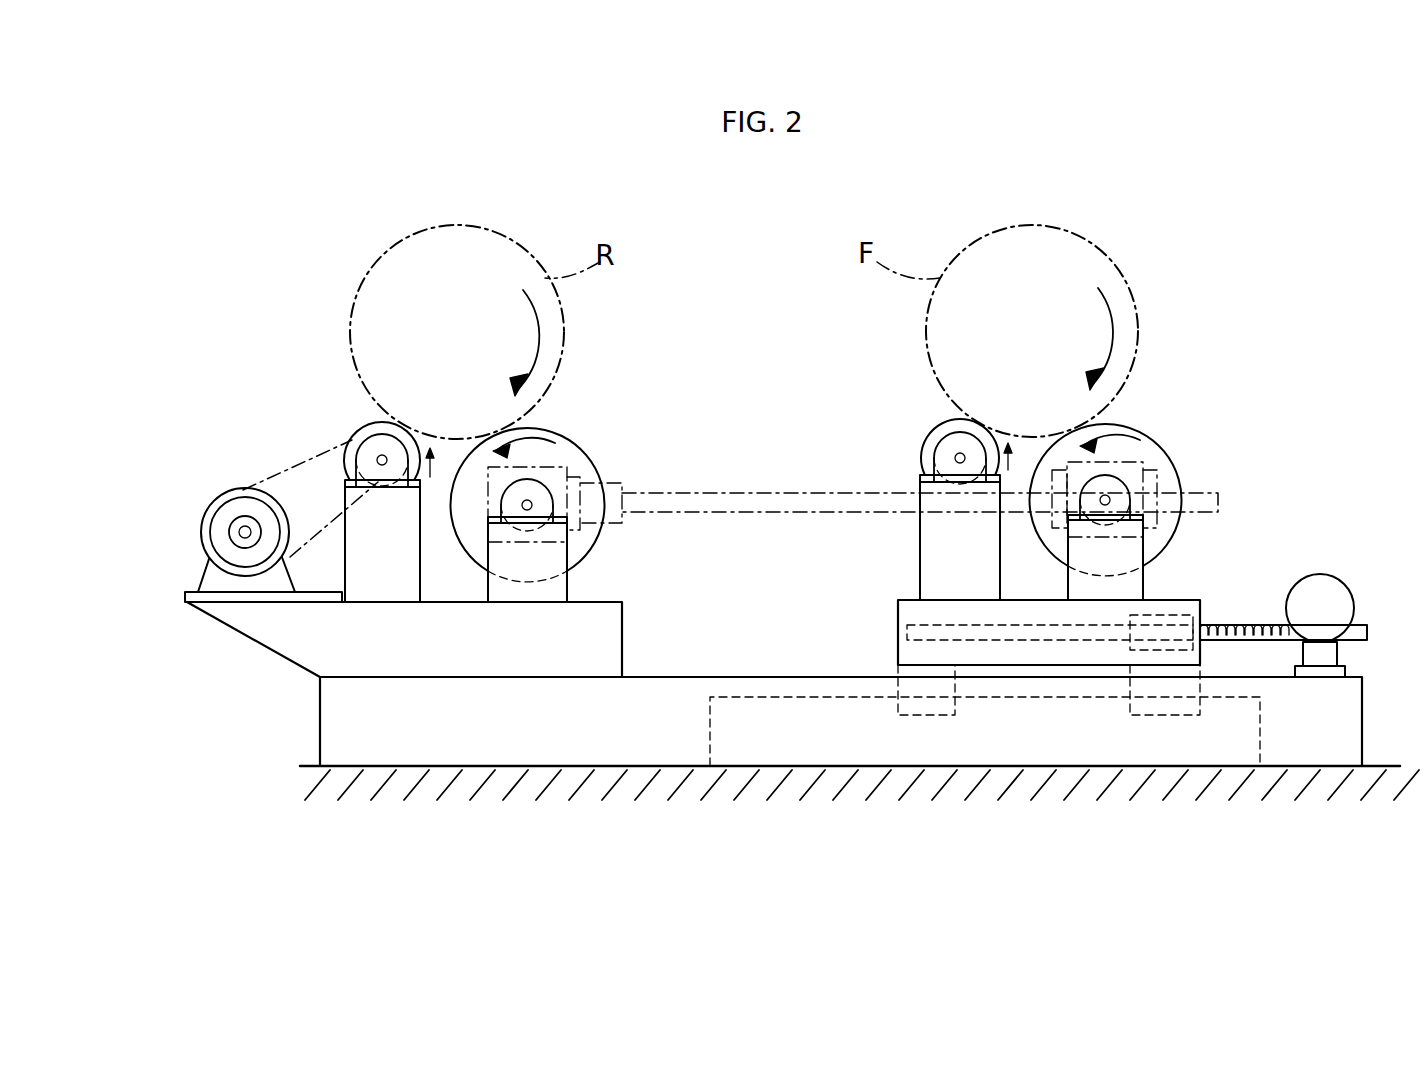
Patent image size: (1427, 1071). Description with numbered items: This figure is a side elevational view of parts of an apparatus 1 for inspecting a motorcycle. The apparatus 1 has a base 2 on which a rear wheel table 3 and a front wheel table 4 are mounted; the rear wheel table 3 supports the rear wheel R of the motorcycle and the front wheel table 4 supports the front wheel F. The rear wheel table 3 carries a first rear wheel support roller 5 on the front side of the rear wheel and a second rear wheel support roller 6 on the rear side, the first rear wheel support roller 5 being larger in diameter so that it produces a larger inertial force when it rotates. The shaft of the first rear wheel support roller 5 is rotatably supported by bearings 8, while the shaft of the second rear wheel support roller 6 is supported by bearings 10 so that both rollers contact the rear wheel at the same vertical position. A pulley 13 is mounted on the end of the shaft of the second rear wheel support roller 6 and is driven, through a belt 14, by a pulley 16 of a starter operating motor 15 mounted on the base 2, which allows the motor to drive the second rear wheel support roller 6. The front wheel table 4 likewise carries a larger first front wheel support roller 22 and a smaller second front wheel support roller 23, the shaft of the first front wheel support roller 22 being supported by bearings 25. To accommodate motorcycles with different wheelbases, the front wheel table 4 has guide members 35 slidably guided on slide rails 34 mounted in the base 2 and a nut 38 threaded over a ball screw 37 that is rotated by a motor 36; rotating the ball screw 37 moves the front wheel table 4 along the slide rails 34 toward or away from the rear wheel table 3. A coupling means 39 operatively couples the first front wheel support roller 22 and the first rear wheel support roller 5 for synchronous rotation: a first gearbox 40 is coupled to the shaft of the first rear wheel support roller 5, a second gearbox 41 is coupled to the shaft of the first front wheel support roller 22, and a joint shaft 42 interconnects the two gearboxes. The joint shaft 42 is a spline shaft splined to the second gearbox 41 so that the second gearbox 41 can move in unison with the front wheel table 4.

The apparatus for inspecting a motorcycle 1 is at (1284, 181).
The base 2 is at (1363, 727).
The rear wheel table 3 is at (600, 632).
The front wheel table 4 is at (908, 613).
The first rear wheel support roller 5 is at (548, 486).
The second rear wheel support roller 6 is at (357, 498).
The bearings 8 is at (540, 500).
The bearings 10 is at (393, 468).
The pulley 13 is at (357, 468).
The belt 14 is at (285, 465).
The starter operating motor 15 is at (193, 590).
The pulley 16 is at (224, 493).
The first front wheel support roller 22 is at (1146, 493).
The second front wheel support roller 23 is at (926, 443).
The bearings 25 is at (1118, 498).
The slide rails 34 is at (1262, 730).
The guide members 35 is at (957, 713).
The motor 36 is at (1330, 602).
The ball screw 37 is at (960, 625).
The nut 38 is at (1170, 612).
The coupling means 39 is at (725, 472).
The first gearbox 40 is at (568, 463).
The second gearbox 41 is at (1127, 460).
The joint shaft 42 is at (778, 515).